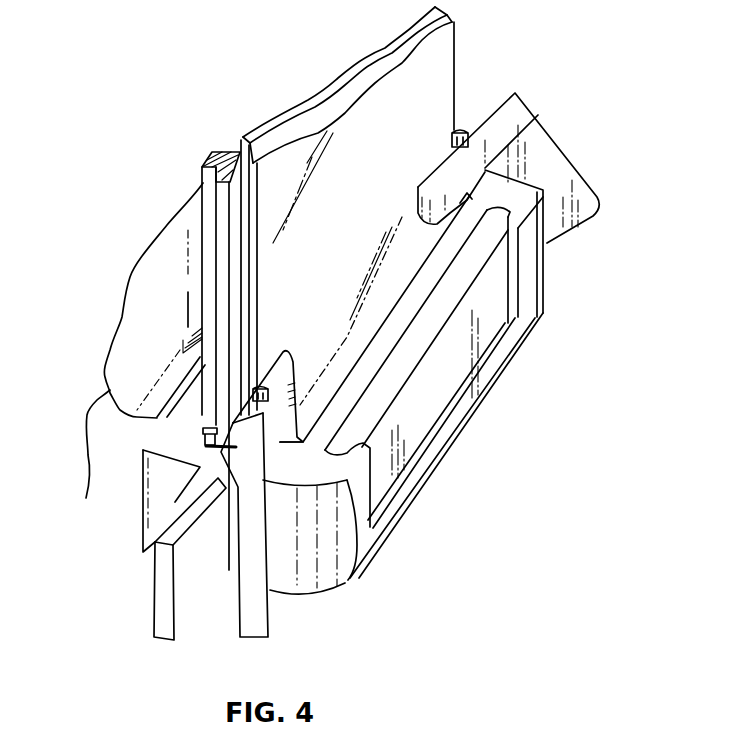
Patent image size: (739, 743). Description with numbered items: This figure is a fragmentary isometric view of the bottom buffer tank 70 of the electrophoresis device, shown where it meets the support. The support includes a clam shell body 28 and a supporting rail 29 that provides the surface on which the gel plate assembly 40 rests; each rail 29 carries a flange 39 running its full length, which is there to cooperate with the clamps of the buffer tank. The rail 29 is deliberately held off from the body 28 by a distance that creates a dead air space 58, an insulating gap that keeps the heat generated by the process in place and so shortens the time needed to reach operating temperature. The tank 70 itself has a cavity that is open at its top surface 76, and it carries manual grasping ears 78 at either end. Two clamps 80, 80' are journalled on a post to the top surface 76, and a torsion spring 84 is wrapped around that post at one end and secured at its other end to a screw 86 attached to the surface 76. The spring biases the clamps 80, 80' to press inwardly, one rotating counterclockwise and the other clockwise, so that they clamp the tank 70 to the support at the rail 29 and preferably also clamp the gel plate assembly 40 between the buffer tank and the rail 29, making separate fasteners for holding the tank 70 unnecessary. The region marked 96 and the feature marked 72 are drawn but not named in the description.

The clam shell body 28 is at (132, 353).
The supporting rail 29 is at (206, 163).
The flange 39 is at (207, 267).
The gel plate assembly 40 is at (343, 246).
The dead air space 58 is at (275, 108).
The bottom buffer tank 70 is at (558, 318).
The boss lower surface 72 is at (343, 575).
The top surface 76 is at (365, 537).
The manual grasping ear 78 is at (198, 590).
The clamp 80 is at (310, 505).
The clamp 80' is at (425, 184).
The torsion spring 84 is at (213, 484).
The screw 86 is at (165, 434).
The slot 96 is at (433, 397).